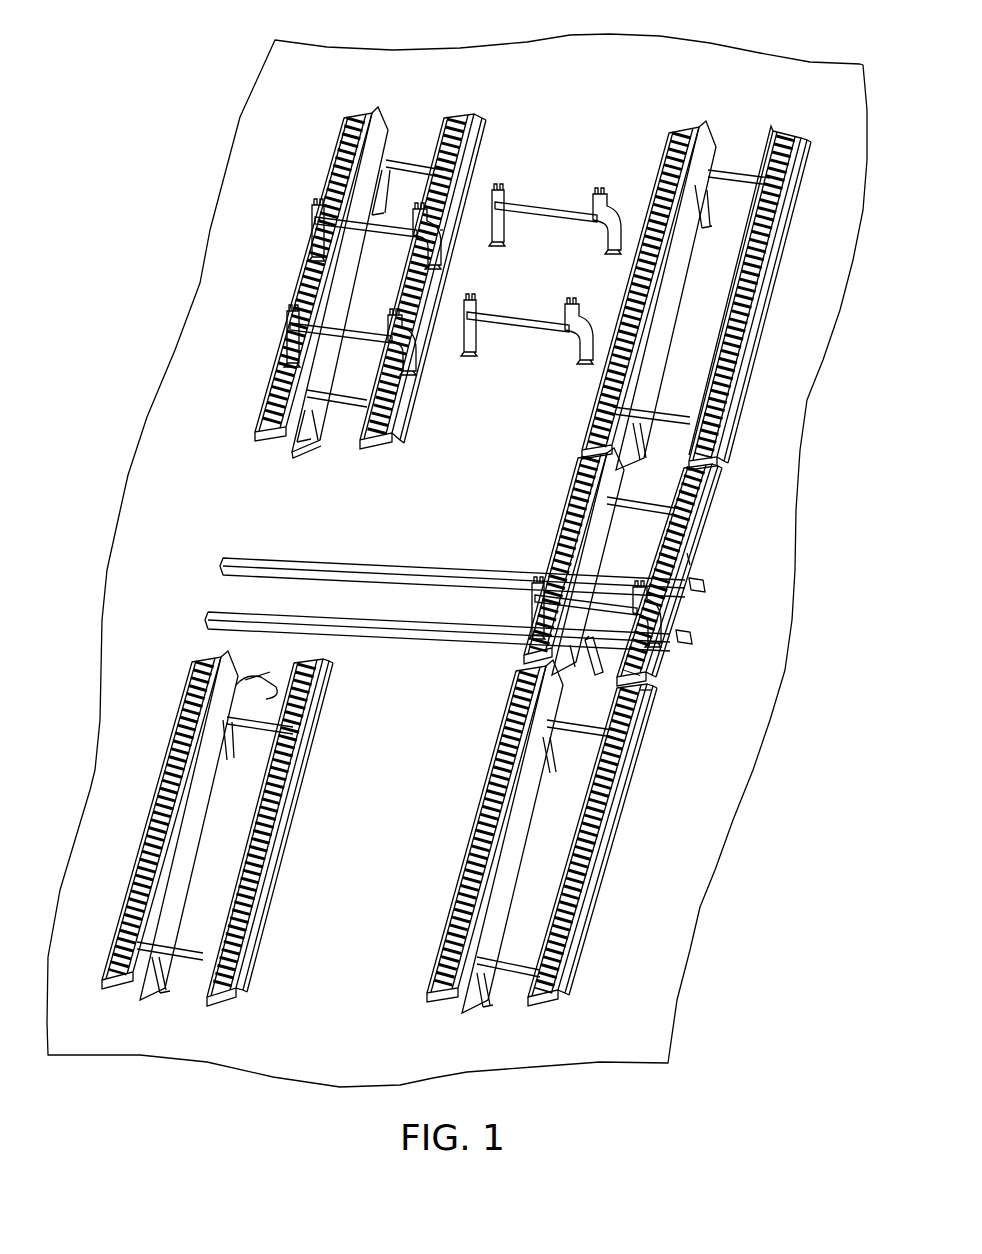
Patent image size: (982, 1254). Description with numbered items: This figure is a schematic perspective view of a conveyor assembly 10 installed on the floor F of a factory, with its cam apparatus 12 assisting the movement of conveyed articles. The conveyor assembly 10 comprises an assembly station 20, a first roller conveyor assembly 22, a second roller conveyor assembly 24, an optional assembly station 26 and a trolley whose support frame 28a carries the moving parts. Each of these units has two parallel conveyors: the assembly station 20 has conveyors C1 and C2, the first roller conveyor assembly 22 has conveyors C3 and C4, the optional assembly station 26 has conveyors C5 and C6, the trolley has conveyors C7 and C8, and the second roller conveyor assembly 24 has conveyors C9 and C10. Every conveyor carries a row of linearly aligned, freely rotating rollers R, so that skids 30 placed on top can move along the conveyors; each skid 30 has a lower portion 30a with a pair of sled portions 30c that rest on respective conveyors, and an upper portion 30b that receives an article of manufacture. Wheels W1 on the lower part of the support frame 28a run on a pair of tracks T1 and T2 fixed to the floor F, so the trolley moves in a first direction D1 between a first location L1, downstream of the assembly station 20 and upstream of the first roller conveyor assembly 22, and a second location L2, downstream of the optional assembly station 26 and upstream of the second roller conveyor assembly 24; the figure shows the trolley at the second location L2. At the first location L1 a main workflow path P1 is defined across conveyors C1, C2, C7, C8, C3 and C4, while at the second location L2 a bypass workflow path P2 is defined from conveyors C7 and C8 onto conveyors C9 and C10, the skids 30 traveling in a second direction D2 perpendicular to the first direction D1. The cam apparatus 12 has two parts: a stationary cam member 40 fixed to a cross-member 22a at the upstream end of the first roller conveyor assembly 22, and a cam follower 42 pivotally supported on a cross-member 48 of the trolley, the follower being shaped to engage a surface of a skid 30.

The conveyor assembly 10 is at (176, 55).
The floor F is at (548, 78).
The assembly station 20 is at (370, 261).
The first roller conveyor assembly 22 is at (246, 813).
The cross-member 22a is at (265, 697).
The second roller conveyor assembly 24 is at (557, 824).
The optional assembly station 26 is at (660, 388).
The support frame 28a is at (690, 570).
The skid 30 is at (525, 213).
The lower portion 30a is at (597, 240).
The upper portion 30b is at (497, 190).
The sled portions 30c is at (493, 250).
The cam apparatus 12 is at (247, 670).
The stationary cam member 40 is at (272, 672).
The cam follower 42 is at (600, 690).
The cross-member 48 is at (576, 668).
The rollers R is at (650, 210).
The conveyor C1 is at (355, 115).
The conveyor C2 is at (423, 257).
The conveyor C3 is at (200, 660).
The conveyor C4 is at (310, 665).
The conveyor C5 is at (675, 130).
The conveyor C6 is at (790, 132).
The conveyor C7 is at (570, 480).
The conveyor C8 is at (700, 507).
The conveyor C9 is at (487, 765).
The conveyor C10 is at (613, 817).
The first location L1 is at (279, 598).
The second location L2 is at (612, 600).
The track T1 is at (483, 560).
The track T2 is at (440, 627).
The main workflow path P1 is at (326, 476).
The bypass workflow path P2 is at (530, 885).
The first direction D1 is at (340, 540).
The second direction D2 is at (206, 865).
The wheels W1 is at (690, 662).